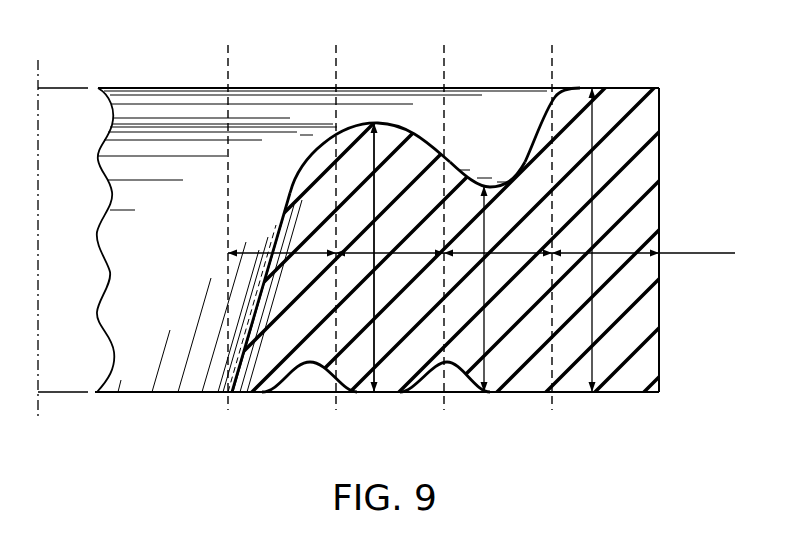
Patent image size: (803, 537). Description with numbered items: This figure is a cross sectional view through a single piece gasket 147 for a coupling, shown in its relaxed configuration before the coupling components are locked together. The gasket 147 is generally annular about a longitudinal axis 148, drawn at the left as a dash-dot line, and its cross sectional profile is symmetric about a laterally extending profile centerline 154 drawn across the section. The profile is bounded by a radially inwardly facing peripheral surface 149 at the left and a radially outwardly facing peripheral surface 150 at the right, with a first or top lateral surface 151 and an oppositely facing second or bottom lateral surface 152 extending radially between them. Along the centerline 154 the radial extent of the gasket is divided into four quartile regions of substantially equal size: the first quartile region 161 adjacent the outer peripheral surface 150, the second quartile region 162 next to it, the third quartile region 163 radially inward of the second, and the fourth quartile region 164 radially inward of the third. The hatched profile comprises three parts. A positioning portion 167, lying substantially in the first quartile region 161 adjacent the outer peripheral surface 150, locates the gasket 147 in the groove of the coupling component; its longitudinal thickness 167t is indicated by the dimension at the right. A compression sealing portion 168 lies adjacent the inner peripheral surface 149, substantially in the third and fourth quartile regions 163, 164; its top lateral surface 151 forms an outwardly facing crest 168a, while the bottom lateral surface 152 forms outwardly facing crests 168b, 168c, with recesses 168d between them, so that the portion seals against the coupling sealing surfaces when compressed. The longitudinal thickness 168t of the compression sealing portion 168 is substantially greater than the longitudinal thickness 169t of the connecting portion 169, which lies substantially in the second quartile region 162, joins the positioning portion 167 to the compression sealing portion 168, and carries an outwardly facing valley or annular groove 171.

The gasket 147 is at (278, 70).
The longitudinal axis 148 is at (40, 72).
The radially inwardly facing peripheral surface 149 is at (257, 305).
The radially outwardly facing peripheral surface 150 is at (662, 231).
The first lateral surface 151 is at (580, 88).
The second lateral surface 152 is at (532, 393).
The profile centerline 154 is at (706, 254).
The first quartile region 161 is at (632, 256).
The second quartile region 162 is at (524, 256).
The third quartile region 163 is at (406, 256).
The fourth quartile region 164 is at (311, 256).
The positioning portion 167 is at (637, 182).
The longitudinal thickness of the positioning portion 167t is at (592, 109).
The compression sealing portion 168 is at (392, 187).
The crest 168a is at (377, 124).
The crest 168b is at (375, 392).
The crest 168c is at (244, 393).
The bottom grooves 168d is at (310, 363).
The longitudinal thickness of the compression sealing portion 168t is at (373, 203).
The connecting portion 169 is at (537, 232).
The longitudinal thickness of the connecting portion 169t is at (492, 390).
The valley 171 is at (497, 187).